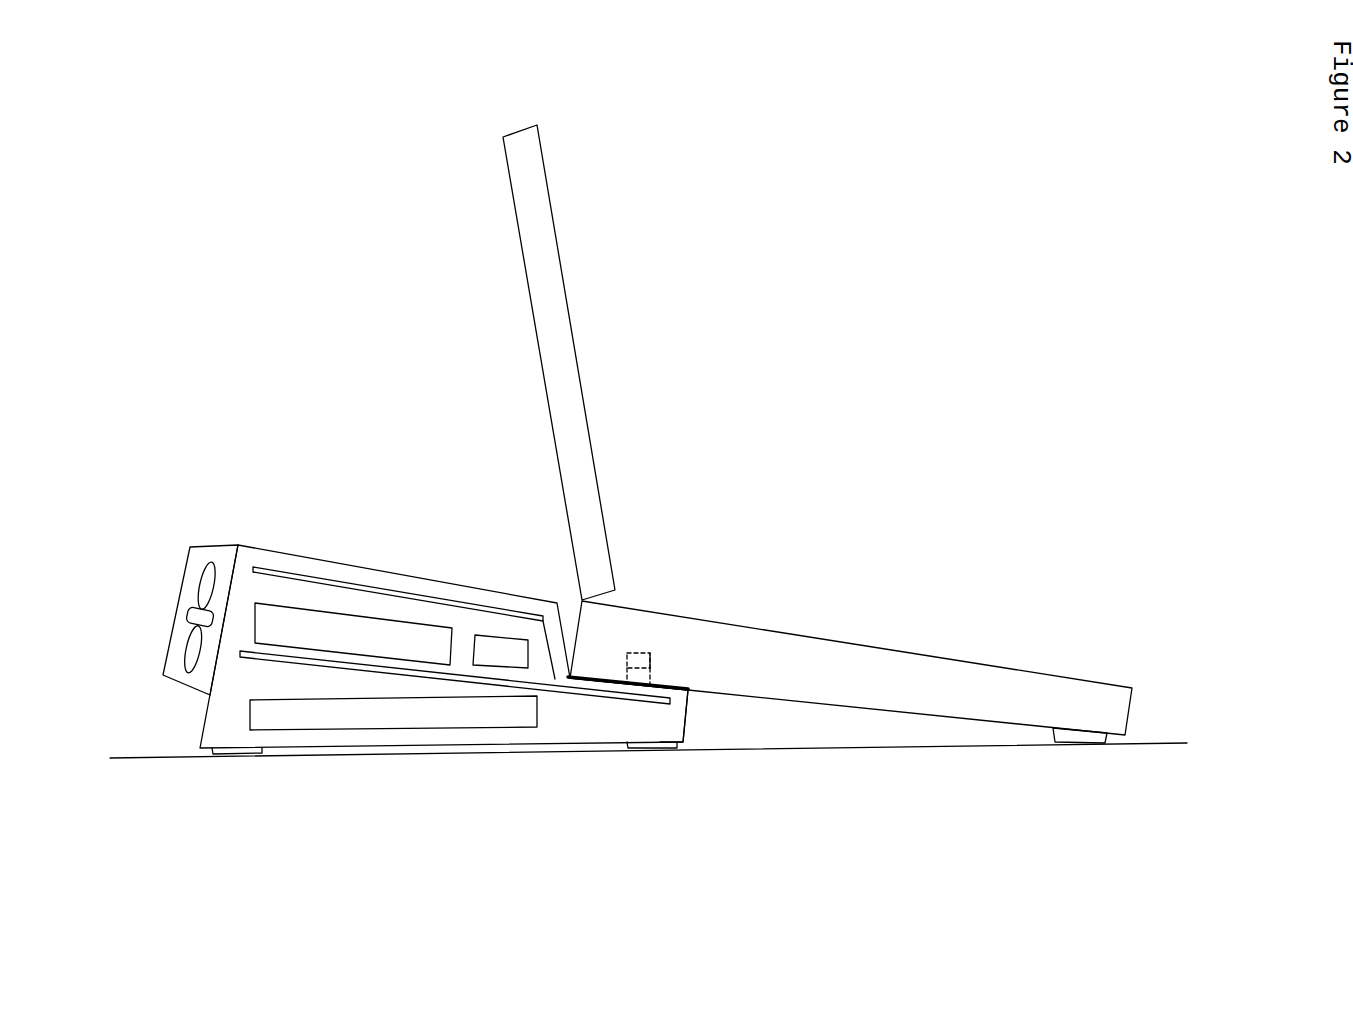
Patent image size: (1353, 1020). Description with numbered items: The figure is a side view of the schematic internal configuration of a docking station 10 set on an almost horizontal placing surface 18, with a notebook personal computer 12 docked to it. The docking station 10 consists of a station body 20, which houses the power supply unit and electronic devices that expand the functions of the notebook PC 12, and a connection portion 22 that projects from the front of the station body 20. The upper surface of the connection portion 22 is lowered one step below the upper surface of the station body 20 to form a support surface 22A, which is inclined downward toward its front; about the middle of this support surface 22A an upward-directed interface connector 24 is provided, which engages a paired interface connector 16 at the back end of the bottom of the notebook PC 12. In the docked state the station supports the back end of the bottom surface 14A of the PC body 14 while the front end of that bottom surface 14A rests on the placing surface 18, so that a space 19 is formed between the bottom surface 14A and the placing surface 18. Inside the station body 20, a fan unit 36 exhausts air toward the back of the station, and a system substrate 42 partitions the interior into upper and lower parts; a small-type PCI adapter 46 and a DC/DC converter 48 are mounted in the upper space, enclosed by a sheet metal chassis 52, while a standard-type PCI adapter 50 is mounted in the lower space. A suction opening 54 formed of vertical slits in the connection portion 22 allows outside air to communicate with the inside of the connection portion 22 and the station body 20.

The docking station 10 is at (317, 508).
The notebook personal computer 12 is at (727, 458).
The PC body 14 is at (851, 693).
The bottom surface 14A is at (927, 717).
The interface connector 16 is at (628, 653).
The placing surface 18 is at (1157, 742).
The space 19 is at (833, 725).
The station body 20 is at (263, 558).
The connection portion 22 is at (476, 750).
The support surface 22A is at (675, 682).
The interface connector 24 is at (650, 673).
The fan unit 36 is at (208, 583).
The system substrate 42 is at (253, 658).
The PCI adapter 46 is at (337, 620).
The DC/DC converter 48 is at (497, 647).
The PCI adapter 50 is at (388, 718).
The sheet metal chassis 52 is at (433, 600).
The suction opening 54 is at (690, 732).